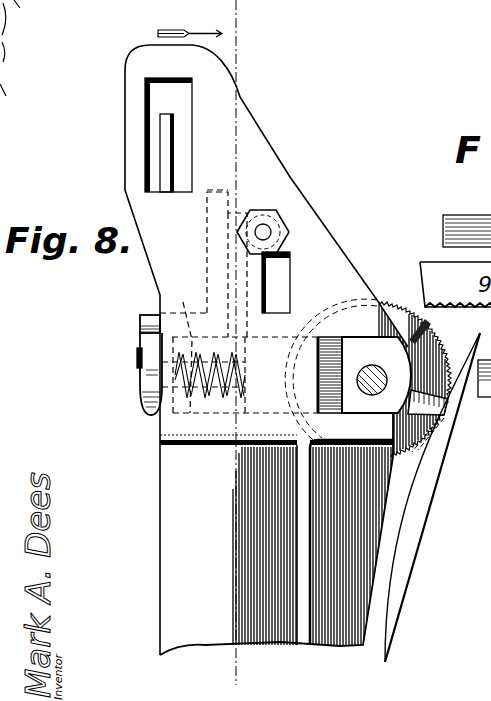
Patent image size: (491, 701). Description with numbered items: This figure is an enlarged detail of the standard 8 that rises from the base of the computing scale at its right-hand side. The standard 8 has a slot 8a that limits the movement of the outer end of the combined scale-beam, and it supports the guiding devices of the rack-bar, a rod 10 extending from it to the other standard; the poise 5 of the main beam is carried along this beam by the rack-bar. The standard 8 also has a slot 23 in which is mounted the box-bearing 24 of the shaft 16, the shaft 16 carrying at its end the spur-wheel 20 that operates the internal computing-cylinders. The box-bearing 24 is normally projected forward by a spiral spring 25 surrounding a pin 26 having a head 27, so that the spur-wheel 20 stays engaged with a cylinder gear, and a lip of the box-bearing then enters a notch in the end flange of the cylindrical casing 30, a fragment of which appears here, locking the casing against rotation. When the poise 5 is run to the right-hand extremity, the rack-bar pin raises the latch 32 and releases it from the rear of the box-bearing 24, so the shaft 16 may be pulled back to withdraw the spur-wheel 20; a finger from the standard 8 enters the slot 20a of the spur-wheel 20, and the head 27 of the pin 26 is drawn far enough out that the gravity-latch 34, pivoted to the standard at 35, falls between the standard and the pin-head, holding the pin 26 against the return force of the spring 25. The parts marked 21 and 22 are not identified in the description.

The standard 8 is at (266, 350).
The slot 8a is at (145, 112).
The poise 5 is at (165, 148).
The rod 10 is at (268, 230).
The latch 32 is at (228, 260).
The spiral spring 25 is at (181, 348).
The pin 26 is at (240, 386).
The pivot 35 is at (148, 319).
The gravity-latch 34 is at (150, 369).
The head 27 is at (145, 386).
The spur-wheel 20 is at (382, 302).
The slot 20a is at (430, 327).
The slot 23 is at (325, 337).
The shaft 16 is at (379, 373).
The box-bearing 24 is at (377, 372).
The pawl 21 is at (447, 404).
The pawl tip 22 is at (441, 412).
The cylindrical casing 30 is at (424, 505).